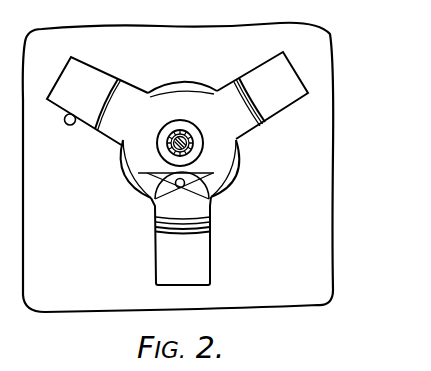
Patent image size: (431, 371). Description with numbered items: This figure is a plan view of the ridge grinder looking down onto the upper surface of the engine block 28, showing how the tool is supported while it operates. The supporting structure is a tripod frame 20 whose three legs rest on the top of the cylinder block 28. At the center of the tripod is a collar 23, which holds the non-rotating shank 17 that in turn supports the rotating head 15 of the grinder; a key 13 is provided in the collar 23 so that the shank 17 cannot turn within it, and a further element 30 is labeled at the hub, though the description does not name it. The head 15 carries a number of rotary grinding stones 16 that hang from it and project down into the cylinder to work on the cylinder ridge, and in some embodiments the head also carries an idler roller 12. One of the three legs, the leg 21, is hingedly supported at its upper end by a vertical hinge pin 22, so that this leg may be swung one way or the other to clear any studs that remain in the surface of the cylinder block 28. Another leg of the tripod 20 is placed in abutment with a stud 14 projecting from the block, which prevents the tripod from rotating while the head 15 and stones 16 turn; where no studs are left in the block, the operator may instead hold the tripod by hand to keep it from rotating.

The idler roller 12 is at (210, 61).
The key 13 is at (180, 158).
The stud 14 is at (68, 125).
The rotating head 15 is at (126, 193).
The rotary grinding stones 16 is at (222, 194).
The shank 17 is at (181, 131).
The tripod frame 20 is at (244, 133).
The leg 21 is at (198, 243).
The hinge pin 22 is at (176, 187).
The collar 23 is at (192, 130).
The engine block 28 is at (178, 167).
The inner ring 30 is at (170, 142).